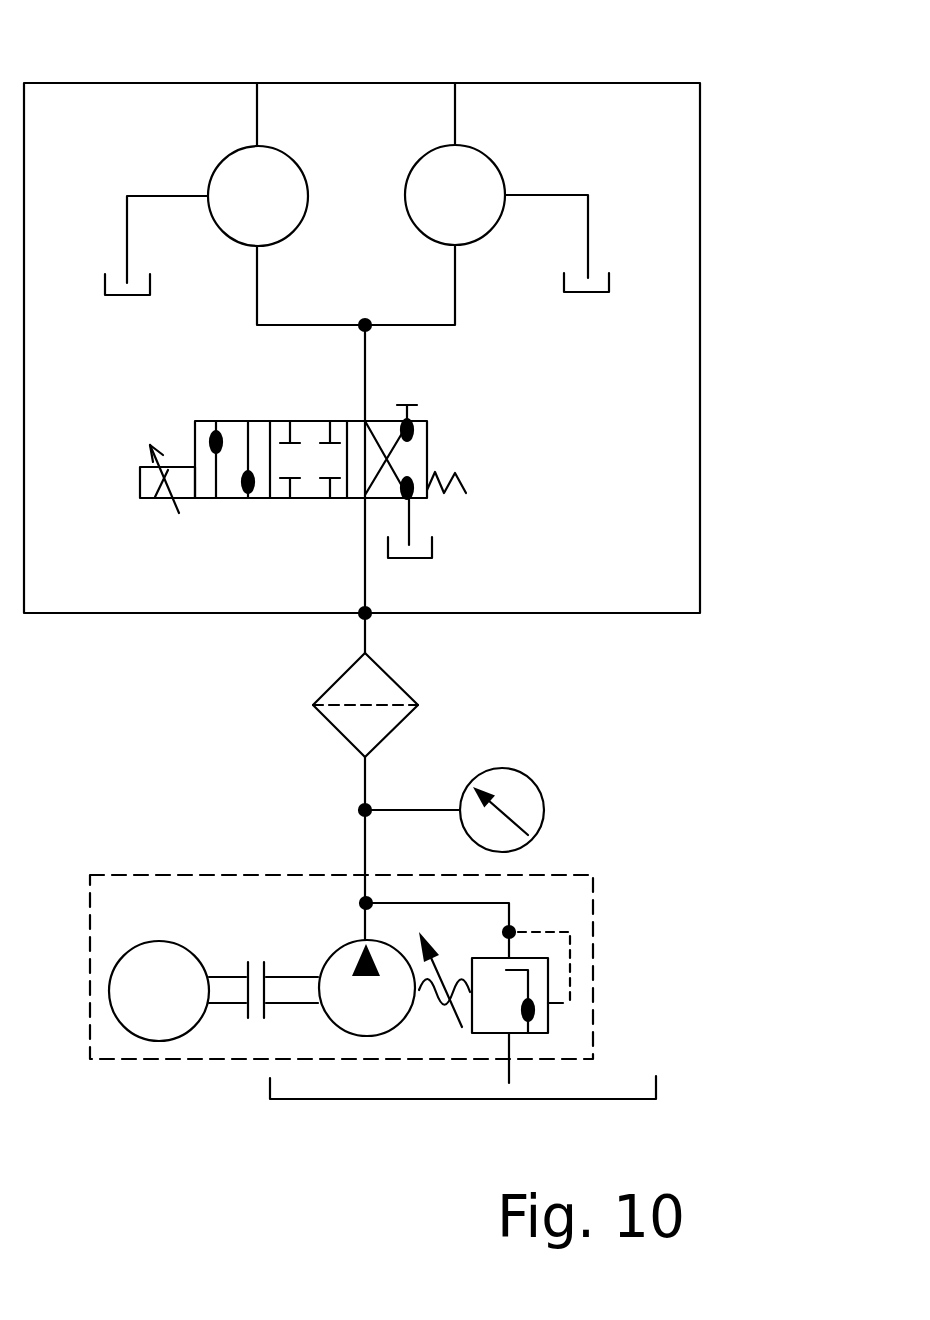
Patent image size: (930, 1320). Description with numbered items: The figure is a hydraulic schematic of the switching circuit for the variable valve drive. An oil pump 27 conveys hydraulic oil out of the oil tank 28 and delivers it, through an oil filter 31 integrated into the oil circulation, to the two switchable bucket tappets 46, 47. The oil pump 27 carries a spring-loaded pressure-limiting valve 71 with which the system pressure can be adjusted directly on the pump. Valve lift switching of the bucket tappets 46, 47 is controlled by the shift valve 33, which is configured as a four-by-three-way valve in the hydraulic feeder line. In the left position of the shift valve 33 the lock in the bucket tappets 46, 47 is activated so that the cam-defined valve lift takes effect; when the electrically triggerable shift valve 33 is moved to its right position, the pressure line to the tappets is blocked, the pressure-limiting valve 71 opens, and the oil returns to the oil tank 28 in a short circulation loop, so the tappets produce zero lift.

The bucket tappet 46 is at (283, 168).
The bucket tappet 47 is at (441, 168).
The shift valve 33 is at (448, 439).
The oil filter 31 is at (440, 688).
The oil pump 27 is at (357, 1016).
The pressure-limiting valve 71 is at (565, 970).
The oil tank 28 is at (460, 1001).